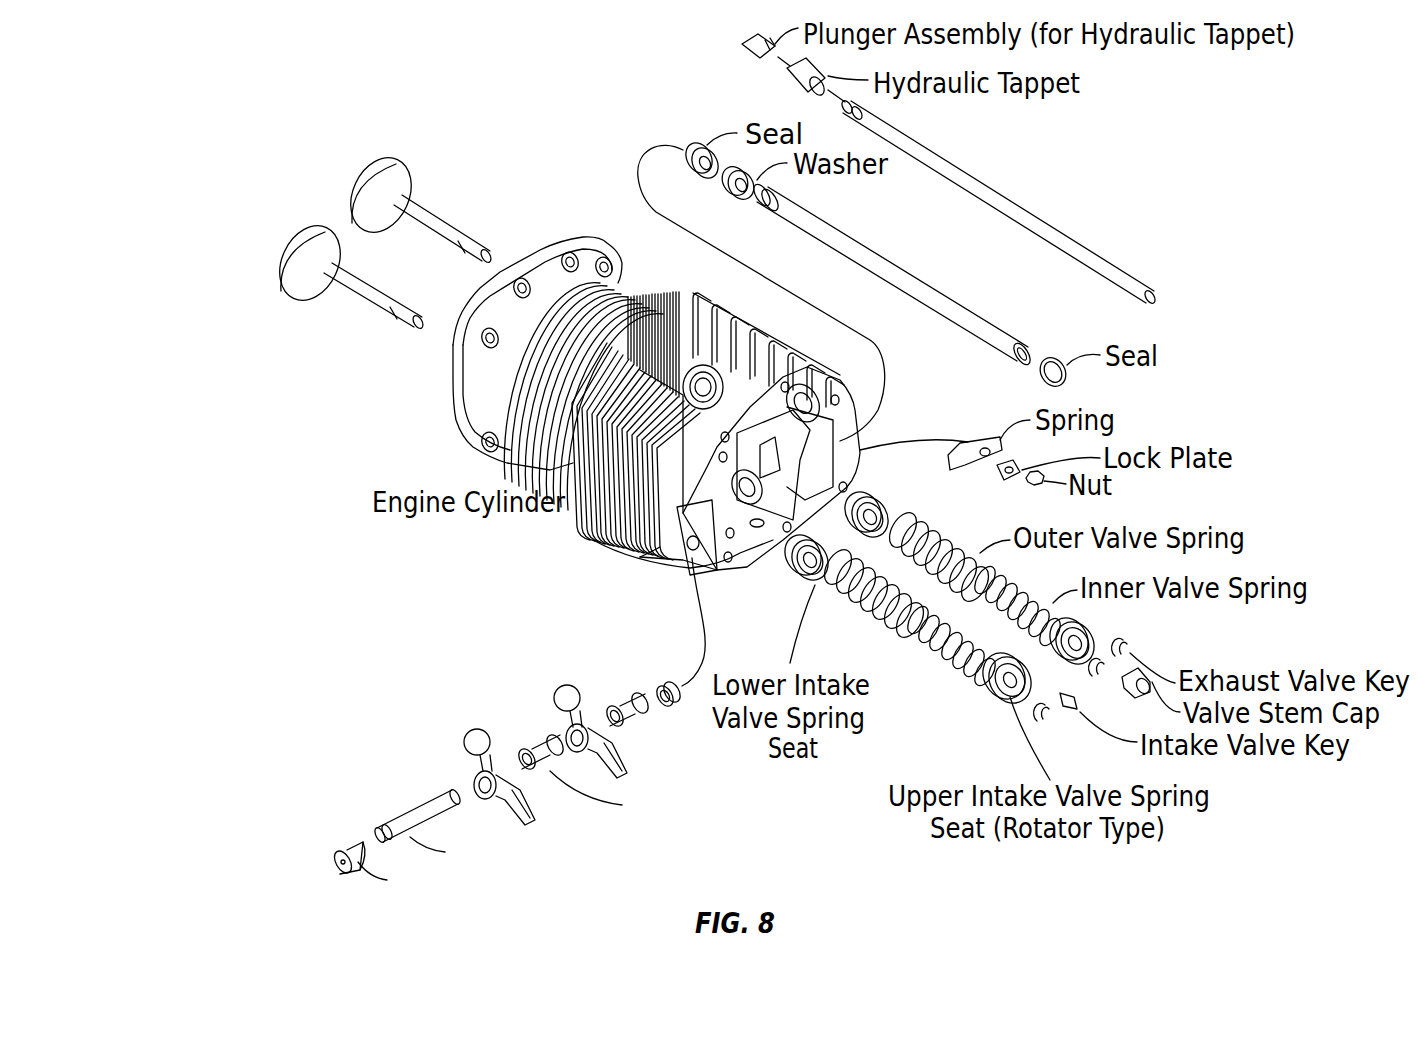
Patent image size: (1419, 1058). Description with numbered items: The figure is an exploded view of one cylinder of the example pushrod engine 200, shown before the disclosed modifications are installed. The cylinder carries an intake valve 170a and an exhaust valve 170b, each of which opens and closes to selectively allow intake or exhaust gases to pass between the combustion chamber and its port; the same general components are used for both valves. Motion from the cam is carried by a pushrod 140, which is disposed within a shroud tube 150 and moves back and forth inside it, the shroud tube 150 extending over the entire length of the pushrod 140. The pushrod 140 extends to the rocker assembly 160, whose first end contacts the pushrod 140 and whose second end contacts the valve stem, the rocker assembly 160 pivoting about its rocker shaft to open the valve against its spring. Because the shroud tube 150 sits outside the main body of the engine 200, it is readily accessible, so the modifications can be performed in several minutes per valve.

The engine 200 is at (176, 76).
The intake valve 170a is at (306, 236).
The exhaust valve 170b is at (387, 167).
The pushrod 140 is at (1030, 211).
The shroud tube 150 is at (959, 297).
The rocker assembly 160 is at (463, 748).